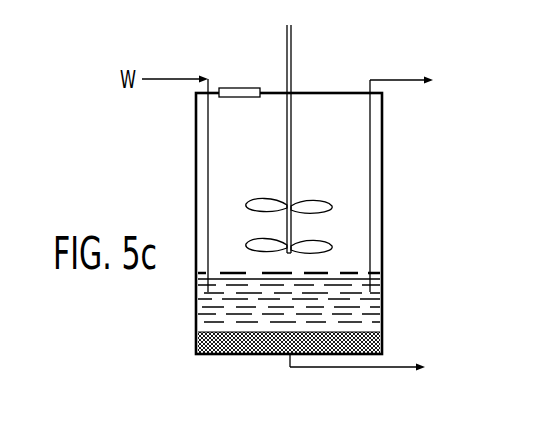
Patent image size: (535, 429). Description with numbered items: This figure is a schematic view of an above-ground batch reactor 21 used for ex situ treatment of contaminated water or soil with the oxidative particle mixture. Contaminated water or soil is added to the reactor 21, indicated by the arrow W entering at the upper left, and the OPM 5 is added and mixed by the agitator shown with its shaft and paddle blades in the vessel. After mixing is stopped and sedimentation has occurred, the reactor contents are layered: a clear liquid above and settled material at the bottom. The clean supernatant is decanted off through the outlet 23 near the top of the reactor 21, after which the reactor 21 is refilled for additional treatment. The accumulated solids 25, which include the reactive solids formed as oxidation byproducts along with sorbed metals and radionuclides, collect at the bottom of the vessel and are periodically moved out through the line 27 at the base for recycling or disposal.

The OPM 5 is at (271, 193).
The reactor 21 is at (382, 119).
The outlet 23 is at (386, 80).
The accumulated solids 25 is at (382, 338).
The line 27 is at (377, 368).